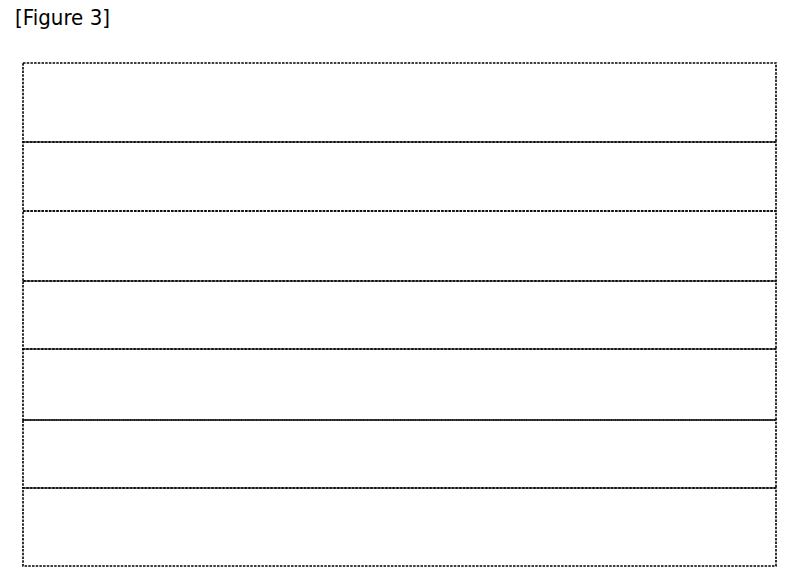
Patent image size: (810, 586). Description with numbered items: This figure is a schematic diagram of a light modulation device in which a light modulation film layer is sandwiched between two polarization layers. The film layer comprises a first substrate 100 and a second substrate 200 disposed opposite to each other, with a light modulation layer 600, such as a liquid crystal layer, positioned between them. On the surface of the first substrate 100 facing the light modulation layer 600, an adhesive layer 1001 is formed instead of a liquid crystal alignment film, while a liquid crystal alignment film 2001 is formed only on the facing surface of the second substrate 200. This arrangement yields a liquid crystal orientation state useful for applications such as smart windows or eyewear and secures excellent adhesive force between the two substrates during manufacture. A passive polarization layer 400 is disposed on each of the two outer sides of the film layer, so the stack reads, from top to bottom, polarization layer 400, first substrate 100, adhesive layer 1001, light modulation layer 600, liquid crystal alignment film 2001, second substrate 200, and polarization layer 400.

The polarization layer 400 is at (399, 314).
The first substrate 100 is at (399, 176).
The adhesive layer 1001 is at (399, 246).
The light modulation layer 600 is at (399, 315).
The liquid crystal alignment film 2001 is at (399, 384).
The second substrate 200 is at (399, 454).